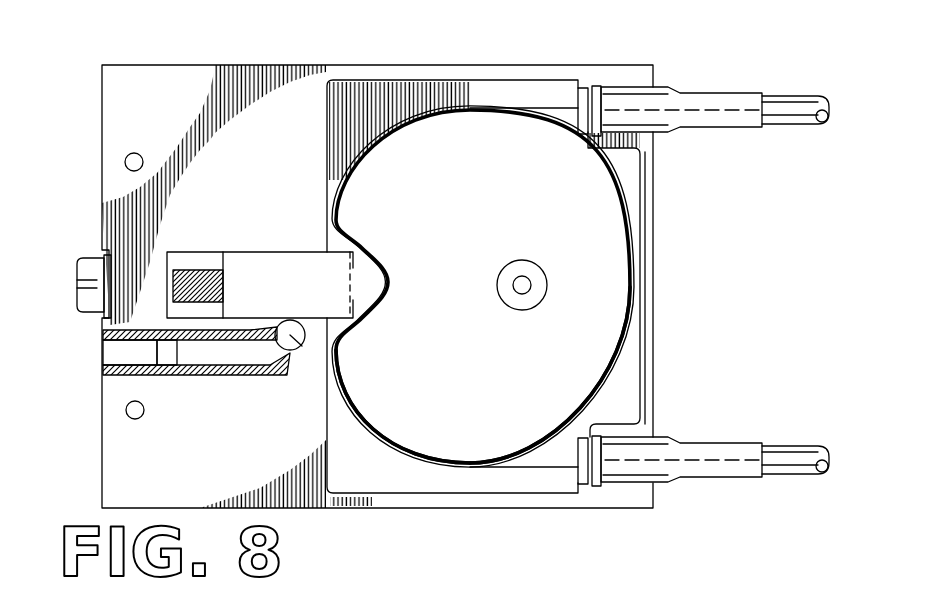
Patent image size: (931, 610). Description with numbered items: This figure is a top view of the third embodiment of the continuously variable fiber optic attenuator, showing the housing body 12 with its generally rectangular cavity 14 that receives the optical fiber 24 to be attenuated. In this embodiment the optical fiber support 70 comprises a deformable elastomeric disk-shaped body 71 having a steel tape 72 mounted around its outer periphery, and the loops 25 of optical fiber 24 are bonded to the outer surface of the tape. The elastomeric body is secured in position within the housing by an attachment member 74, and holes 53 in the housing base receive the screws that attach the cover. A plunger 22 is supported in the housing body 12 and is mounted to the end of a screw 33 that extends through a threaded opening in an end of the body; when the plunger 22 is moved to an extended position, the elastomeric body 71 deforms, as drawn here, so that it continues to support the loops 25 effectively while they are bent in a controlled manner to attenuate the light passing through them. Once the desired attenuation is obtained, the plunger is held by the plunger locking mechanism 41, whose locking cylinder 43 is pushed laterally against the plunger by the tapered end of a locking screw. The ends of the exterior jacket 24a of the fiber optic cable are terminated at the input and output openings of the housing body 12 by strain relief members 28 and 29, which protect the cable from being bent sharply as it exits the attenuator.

The housing body 12 is at (168, 104).
The cavity 14 is at (518, 92).
The plunger 22 is at (265, 268).
The optical fiber 24 is at (558, 470).
The exterior jacket 24a is at (790, 122).
The loops of optical fiber 25 is at (619, 207).
The strain relief member 28 is at (727, 468).
The strain relief member 29 is at (716, 100).
The screw 33 is at (195, 250).
The plunger locking mechanism 41 is at (199, 357).
The locking cylinder 43 is at (293, 351).
The holes 53 is at (513, 286).
The optical fiber support 70 is at (571, 288).
The elastomeric disk-shaped body 71 is at (420, 430).
The steel tape 72 is at (606, 372).
The attachment member 74 is at (538, 272).